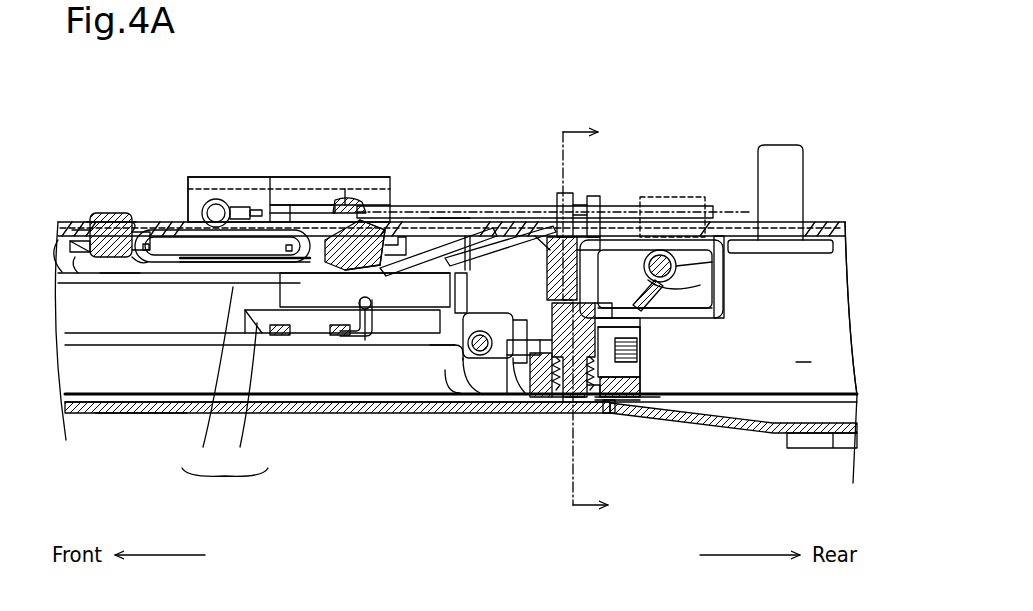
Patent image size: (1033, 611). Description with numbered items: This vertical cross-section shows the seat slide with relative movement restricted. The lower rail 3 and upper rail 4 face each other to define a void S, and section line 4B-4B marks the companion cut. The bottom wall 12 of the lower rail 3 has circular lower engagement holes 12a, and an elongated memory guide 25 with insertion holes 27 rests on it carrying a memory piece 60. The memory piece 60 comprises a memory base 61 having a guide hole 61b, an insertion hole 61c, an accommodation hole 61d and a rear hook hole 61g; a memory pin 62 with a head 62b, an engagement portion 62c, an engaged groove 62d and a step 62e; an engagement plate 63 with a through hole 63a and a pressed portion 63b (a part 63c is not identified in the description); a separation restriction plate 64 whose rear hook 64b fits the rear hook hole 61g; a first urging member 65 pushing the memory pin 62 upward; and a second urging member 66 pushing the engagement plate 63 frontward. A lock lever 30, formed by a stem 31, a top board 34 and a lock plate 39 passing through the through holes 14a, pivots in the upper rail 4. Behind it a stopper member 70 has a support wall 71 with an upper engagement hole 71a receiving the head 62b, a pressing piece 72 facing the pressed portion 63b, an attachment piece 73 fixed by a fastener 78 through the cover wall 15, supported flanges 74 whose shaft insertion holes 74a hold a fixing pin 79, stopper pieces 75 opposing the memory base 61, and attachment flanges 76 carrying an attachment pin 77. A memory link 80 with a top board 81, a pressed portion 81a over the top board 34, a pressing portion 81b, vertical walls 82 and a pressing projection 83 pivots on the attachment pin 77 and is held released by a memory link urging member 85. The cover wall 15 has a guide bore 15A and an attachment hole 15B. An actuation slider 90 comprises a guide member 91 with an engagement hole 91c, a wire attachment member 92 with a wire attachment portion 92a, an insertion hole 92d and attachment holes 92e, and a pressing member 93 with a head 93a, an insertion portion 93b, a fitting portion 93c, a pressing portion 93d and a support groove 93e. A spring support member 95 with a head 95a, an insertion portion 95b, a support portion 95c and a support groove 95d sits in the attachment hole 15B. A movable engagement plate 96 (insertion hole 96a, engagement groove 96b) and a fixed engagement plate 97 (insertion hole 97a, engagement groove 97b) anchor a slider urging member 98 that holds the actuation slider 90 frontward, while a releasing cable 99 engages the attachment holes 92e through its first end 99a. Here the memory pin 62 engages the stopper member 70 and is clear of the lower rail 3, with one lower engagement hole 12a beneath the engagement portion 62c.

The lower rail 3 is at (781, 440).
The upper rail 4 is at (817, 222).
The bottom wall 12 is at (745, 427).
The lower engagement holes 12a is at (187, 413).
The through hole 14a is at (352, 413).
The cover wall 15 is at (840, 222).
The guide bore 15A is at (335, 200).
The attachment hole 15B is at (108, 213).
The memory guide 25 is at (138, 388).
The insertion holes 27 is at (347, 413).
The lock lever 30 is at (225, 485).
The stem 31 is at (213, 379).
The lock plate 39 is at (246, 397).
The top board 34 is at (279, 205).
The memory piece 60 is at (647, 368).
The memory base 61 is at (627, 408).
The guide hole 61b is at (548, 397).
The insertion hole 61c is at (558, 402).
The accommodation hole 61d is at (637, 337).
The rear hook hole 61g is at (655, 422).
The memory pin 62 is at (547, 267).
The head 62b is at (566, 206).
The engagement portion 62c is at (578, 430).
The engaged groove 62d is at (594, 310).
The step 62e is at (553, 310).
The engagement plate 63 is at (473, 327).
The through hole 63a is at (510, 400).
The pressed portion 63b is at (500, 395).
The bracket leg 63c is at (583, 400).
The separation restriction plate 64 is at (648, 350).
The rear hook 64b is at (640, 383).
The first urging member 65 is at (590, 402).
The second urging member 66 is at (640, 355).
The stopper member 70 is at (718, 236).
The support wall 71 is at (722, 325).
The upper engagement hole 71a is at (660, 250).
The pressing piece 72 is at (487, 397).
The attachment piece 73 is at (750, 240).
The supported flanges 74 is at (440, 385).
The shaft insertion hole 74a is at (470, 395).
The stopper pieces 75 is at (462, 303).
The attachment flanges 76 is at (714, 310).
The attachment pin 77 is at (702, 286).
The fastener 78 is at (780, 143).
The fixing pin 79 is at (467, 348).
The memory link 80 is at (455, 236).
The top board 81 is at (627, 206).
The pressed portion 81a is at (457, 216).
The pressing portion 81b is at (375, 330).
The vertical walls 82 is at (500, 222).
The pressing projection 83 is at (541, 222).
The memory link urging member 85 is at (722, 267).
The actuation slider 90 is at (241, 176).
The guide member 91 is at (470, 206).
The engagement hole 91c is at (293, 205).
The wire attachment member 92 is at (250, 177).
The wire attachment portion 92a is at (192, 195).
The insertion hole 92d is at (350, 203).
The attachment holes 92e is at (216, 199).
The pressing member 93 is at (377, 222).
The head 93a is at (378, 222).
The insertion portion 93b is at (393, 222).
The fitting portion 93c is at (422, 222).
The pressing portion 93d is at (317, 357).
The support groove 93e is at (325, 268).
The spring support member 95 is at (104, 213).
The head 95a is at (120, 213).
The insertion portion 95b is at (138, 222).
The support portion 95c is at (113, 287).
The support groove 95d is at (78, 241).
The movable engagement plate 96 is at (385, 243).
The insertion hole 96a is at (358, 305).
The engagement groove 96b is at (287, 243).
The fixed engagement plate 97 is at (67, 222).
The insertion hole 97a is at (78, 258).
The engagement groove 97b is at (148, 258).
The slider urging member 98 is at (210, 262).
The releasing cable 99 is at (676, 197).
The first end 99a is at (232, 206).
The void S is at (803, 351).
The section line 4B- 4B is at (603, 319).